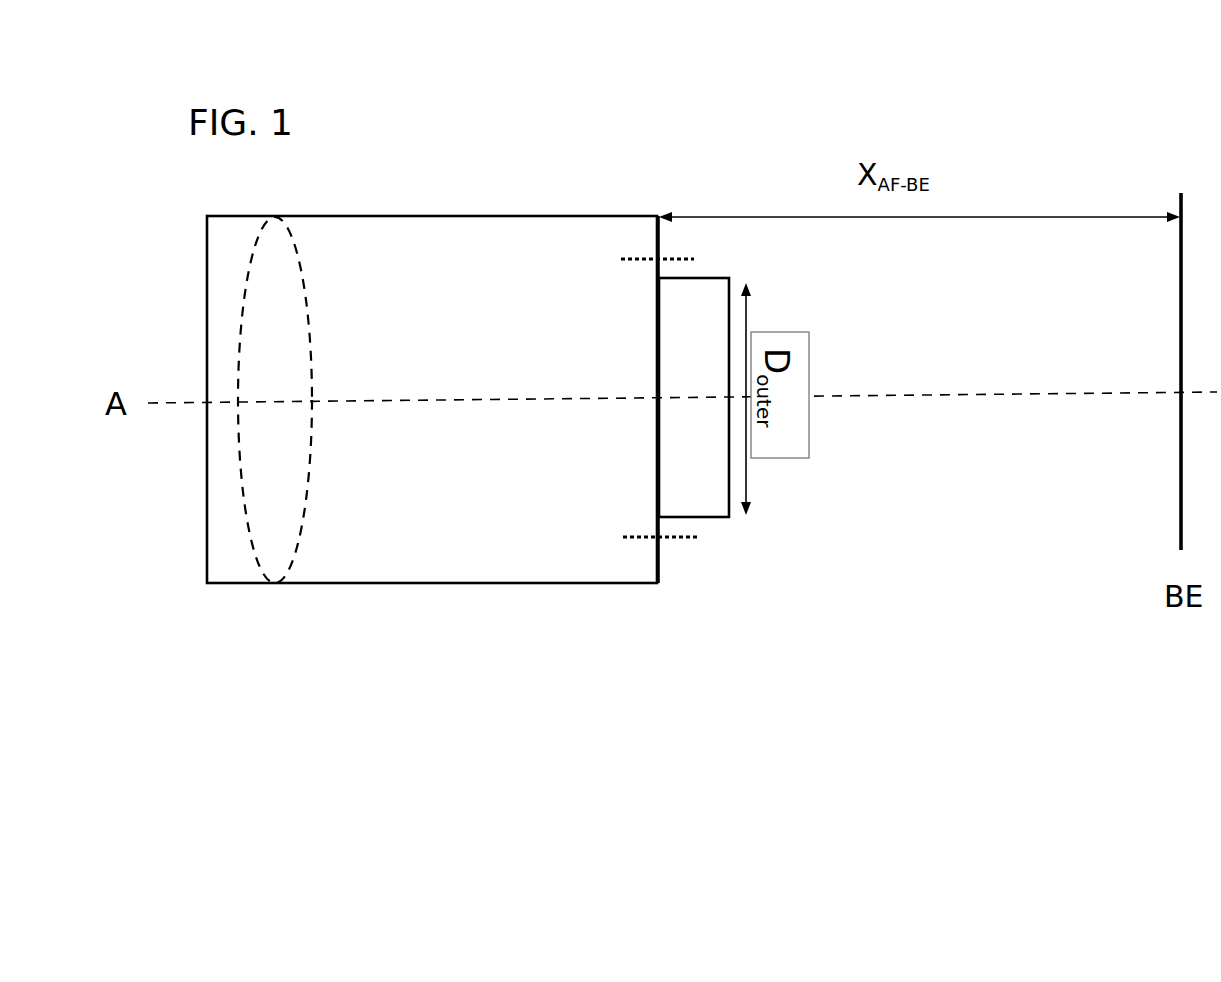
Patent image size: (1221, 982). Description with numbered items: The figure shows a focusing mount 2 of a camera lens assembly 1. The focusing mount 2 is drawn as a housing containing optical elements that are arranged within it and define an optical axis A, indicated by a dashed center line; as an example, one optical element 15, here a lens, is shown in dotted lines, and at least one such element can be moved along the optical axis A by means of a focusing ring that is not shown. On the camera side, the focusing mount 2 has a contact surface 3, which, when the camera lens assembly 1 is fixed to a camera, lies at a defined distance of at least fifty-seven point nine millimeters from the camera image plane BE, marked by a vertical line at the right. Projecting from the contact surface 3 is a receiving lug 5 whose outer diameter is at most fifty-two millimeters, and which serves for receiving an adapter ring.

The camera lens assembly 1 is at (509, 156).
The focusing mount 2 is at (397, 550).
The contact surface 3 is at (662, 560).
The receiving lug 5 is at (712, 503).
The optical element 15 is at (286, 550).